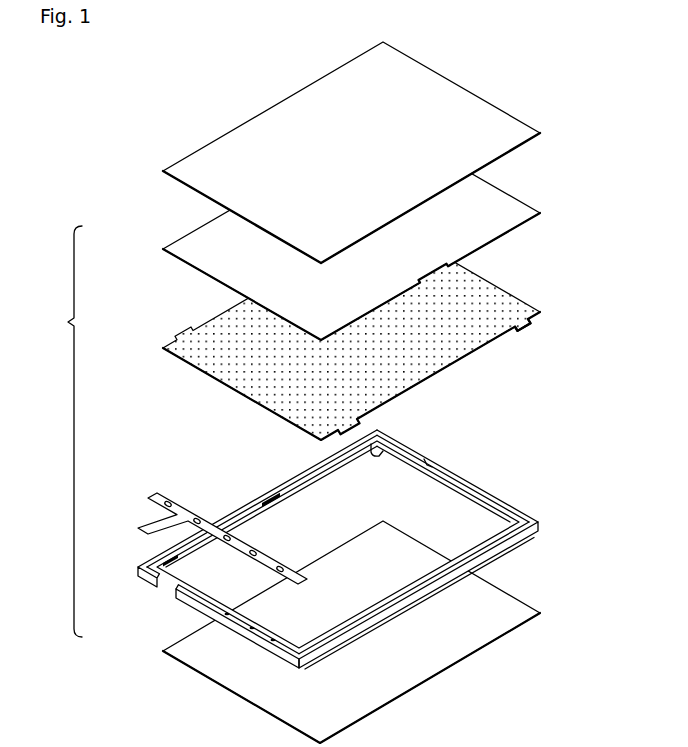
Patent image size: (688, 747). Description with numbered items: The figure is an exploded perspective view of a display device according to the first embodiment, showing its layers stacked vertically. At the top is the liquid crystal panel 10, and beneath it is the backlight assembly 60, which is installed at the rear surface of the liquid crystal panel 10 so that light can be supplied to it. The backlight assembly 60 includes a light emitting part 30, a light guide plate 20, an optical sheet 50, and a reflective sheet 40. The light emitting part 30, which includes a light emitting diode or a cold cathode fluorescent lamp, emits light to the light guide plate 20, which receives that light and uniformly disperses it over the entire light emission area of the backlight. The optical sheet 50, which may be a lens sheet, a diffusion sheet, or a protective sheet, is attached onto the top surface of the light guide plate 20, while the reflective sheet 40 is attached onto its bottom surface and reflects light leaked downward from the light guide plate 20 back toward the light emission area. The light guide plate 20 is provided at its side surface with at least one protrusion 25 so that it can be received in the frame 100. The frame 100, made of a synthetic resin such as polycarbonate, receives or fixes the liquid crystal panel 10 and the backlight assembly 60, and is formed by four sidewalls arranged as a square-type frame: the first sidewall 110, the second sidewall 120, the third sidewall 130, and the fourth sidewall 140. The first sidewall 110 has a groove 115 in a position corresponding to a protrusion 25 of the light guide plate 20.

The liquid crystal panel 10 is at (172, 169).
The optical sheet 50 is at (172, 247).
The light guide plate 20 is at (333, 330).
The protrusion 25 is at (523, 333).
The backlight assembly 60 is at (62, 431).
The light emitting part 30 is at (157, 492).
The frame 100 is at (337, 535).
The first sidewall 110 is at (283, 484).
The groove 115 is at (379, 448).
The second sidewall 120 is at (427, 463).
The third sidewall 130 is at (503, 545).
The fourth sidewall 140 is at (188, 600).
The reflective sheet 40 is at (173, 651).